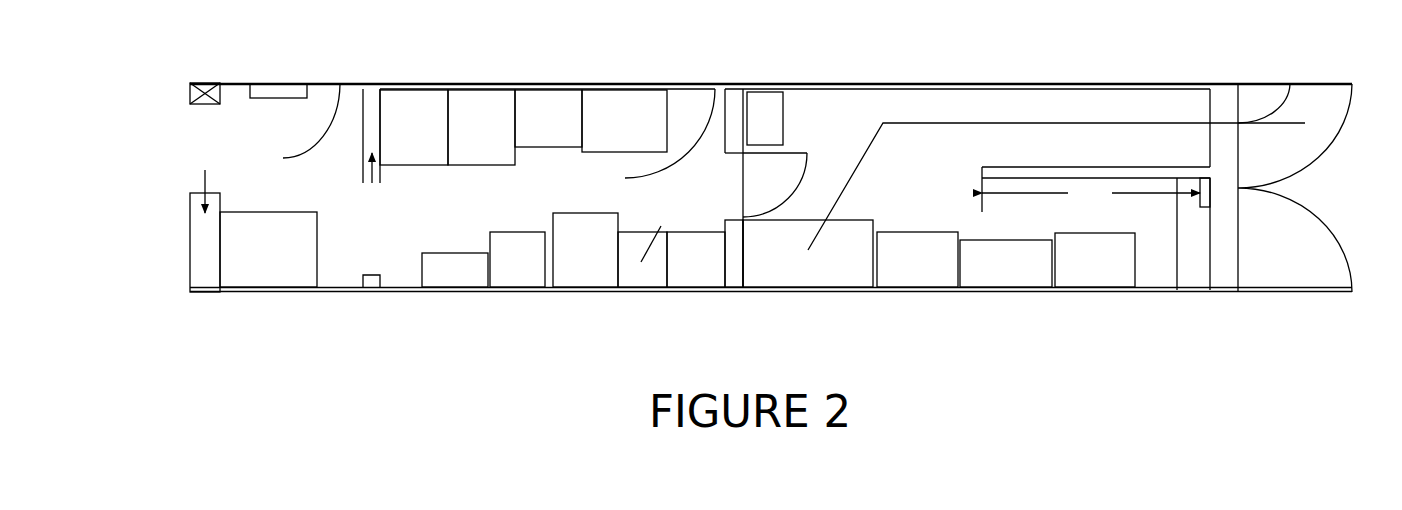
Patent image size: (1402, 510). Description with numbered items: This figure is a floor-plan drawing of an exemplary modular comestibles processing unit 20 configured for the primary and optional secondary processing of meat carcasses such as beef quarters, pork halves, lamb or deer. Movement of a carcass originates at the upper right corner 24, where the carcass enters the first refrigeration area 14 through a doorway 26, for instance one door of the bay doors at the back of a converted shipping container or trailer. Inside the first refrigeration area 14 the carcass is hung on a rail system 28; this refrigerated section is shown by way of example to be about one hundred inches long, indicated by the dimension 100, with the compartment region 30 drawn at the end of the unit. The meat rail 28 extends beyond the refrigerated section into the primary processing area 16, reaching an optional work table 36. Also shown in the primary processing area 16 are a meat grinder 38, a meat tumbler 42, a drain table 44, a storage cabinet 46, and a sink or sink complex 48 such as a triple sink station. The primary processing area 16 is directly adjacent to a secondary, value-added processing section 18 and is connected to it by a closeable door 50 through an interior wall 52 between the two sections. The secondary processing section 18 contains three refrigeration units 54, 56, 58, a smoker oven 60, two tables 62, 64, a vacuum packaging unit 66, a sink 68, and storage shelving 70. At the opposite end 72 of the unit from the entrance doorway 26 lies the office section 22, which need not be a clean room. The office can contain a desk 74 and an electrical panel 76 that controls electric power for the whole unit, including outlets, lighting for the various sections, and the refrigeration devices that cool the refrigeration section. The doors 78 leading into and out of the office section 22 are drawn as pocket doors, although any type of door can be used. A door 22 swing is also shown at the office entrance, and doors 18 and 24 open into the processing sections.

The first refrigeration area 14 is at (1170, 150).
The primary processing area 16 is at (1152, 262).
The secondary processing section 18 is at (717, 88).
The unit 20 is at (538, 406).
The office section 22 is at (340, 84).
The upper right corner 24 is at (1275, 100).
The doorway 26 is at (1330, 145).
The rail system 28 is at (1025, 128).
The hanging compartment 30 is at (1103, 103).
The work table 36 is at (835, 262).
The meat grinder 38 is at (918, 277).
The meat tumbler 42 is at (1010, 277).
The drain table 44 is at (1070, 278).
The storage cabinet 46 is at (763, 120).
The sink or sink complex 48 is at (1193, 272).
The closeable door 50 is at (793, 162).
The interior wall 52 is at (745, 268).
The refrigeration unit 54 is at (420, 105).
The refrigeration unit 56 is at (480, 105).
The refrigeration unit 58 is at (580, 285).
The smoker oven 60 is at (627, 95).
The table 62 is at (548, 100).
The table 64 is at (697, 285).
The vacuum packaging unit 66 is at (518, 285).
The sink 68 is at (453, 283).
The storage shelving 70 is at (645, 285).
The opposite end 72 is at (188, 255).
The desk 74 is at (275, 282).
The electrical panel 76 is at (275, 92).
The doors 78 is at (188, 143).
The dimension 100 is at (1106, 205).